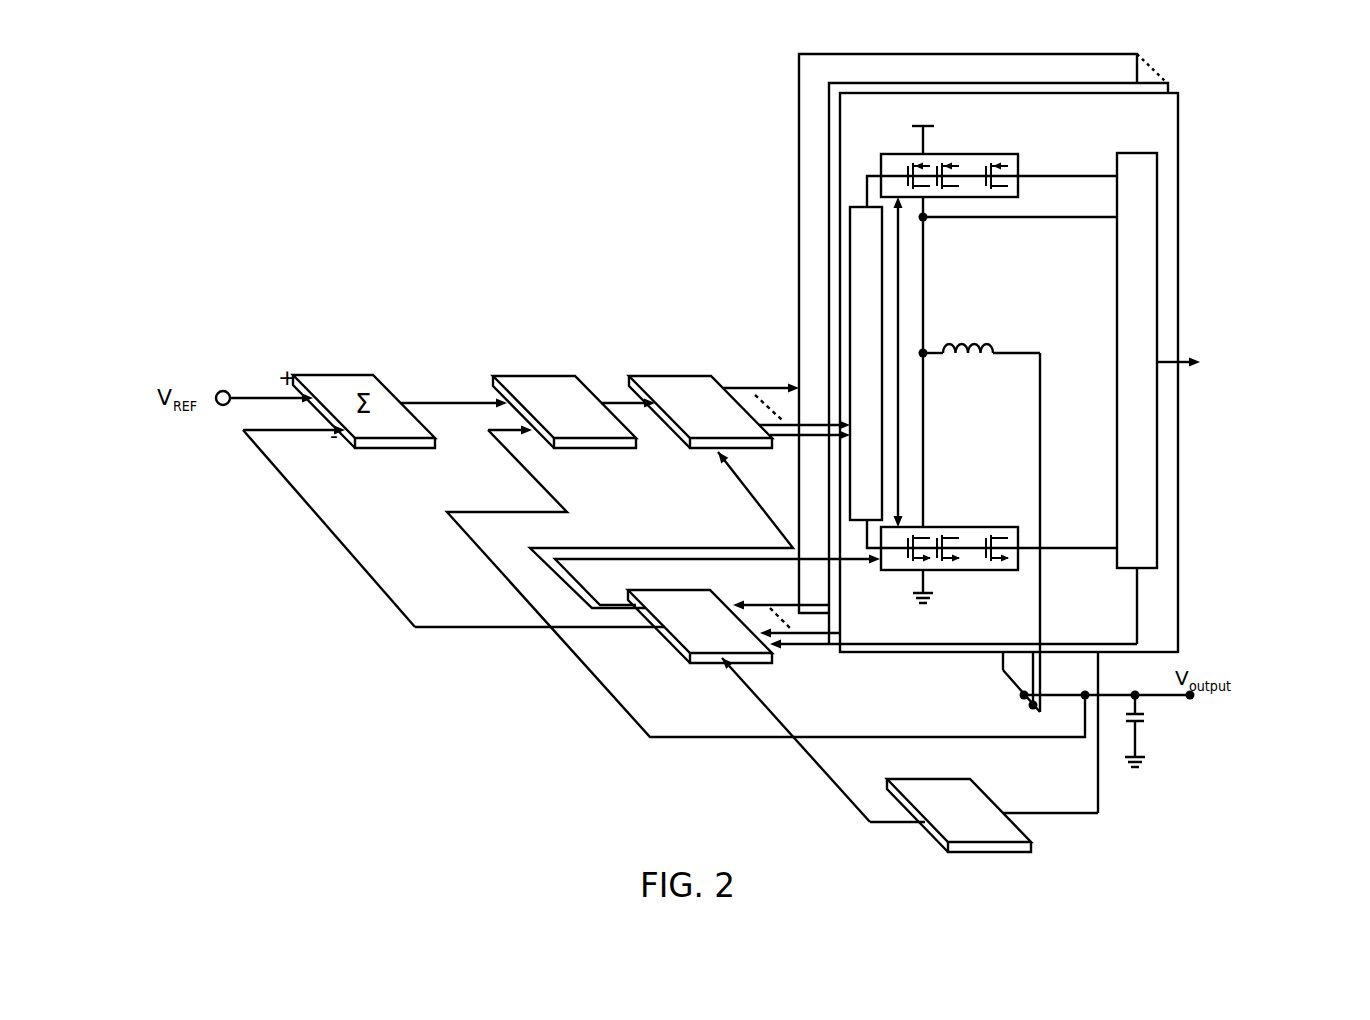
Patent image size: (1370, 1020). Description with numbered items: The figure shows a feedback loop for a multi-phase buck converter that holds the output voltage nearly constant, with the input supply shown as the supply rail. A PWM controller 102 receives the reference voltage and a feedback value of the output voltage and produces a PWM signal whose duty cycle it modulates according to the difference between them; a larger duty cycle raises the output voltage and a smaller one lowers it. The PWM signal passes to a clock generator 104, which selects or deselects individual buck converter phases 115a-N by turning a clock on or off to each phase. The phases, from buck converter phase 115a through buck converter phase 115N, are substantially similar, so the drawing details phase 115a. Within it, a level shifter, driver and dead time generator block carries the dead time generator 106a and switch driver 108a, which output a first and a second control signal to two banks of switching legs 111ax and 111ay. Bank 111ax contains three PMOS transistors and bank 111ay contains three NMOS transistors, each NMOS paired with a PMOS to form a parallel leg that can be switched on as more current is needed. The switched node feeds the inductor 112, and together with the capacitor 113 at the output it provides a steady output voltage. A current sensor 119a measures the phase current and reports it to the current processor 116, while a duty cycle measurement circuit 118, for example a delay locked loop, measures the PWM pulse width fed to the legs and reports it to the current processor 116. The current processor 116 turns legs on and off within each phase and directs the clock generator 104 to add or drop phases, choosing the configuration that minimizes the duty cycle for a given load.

The PWM controller 102 is at (535, 376).
The clock generator 104 is at (690, 376).
The dead time generator 106a is at (883, 430).
The switch driver 108a is at (928, 363).
The bank of switching legs 111ax is at (985, 197).
The bank of switching legs 111ay is at (1002, 570).
The inductor 112 is at (1001, 342).
The capacitor 113 is at (1150, 742).
The buck converter phase 115a is at (1138, 125).
The buck converter phase 115N is at (1112, 78).
The buck converter phases 115a-N is at (1192, 52).
The current processor 116 is at (705, 663).
The duty cycle measurement circuit 118 is at (1027, 833).
The current sensor 119a is at (1157, 282).